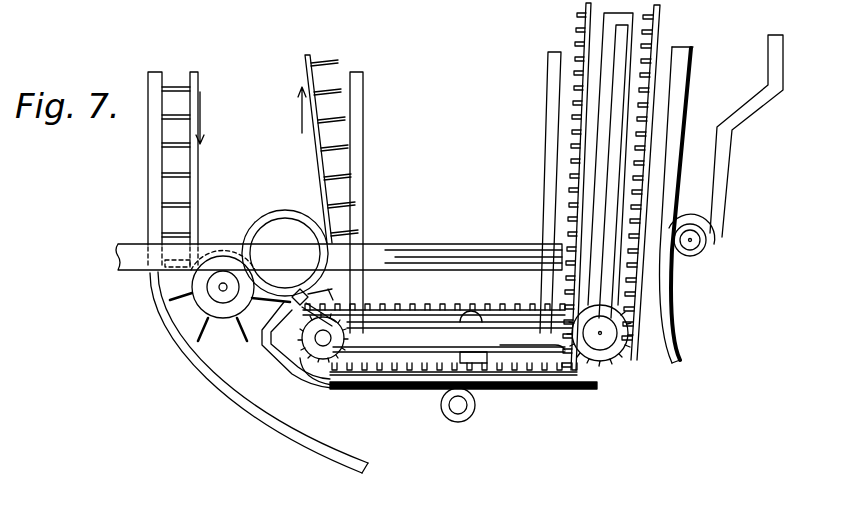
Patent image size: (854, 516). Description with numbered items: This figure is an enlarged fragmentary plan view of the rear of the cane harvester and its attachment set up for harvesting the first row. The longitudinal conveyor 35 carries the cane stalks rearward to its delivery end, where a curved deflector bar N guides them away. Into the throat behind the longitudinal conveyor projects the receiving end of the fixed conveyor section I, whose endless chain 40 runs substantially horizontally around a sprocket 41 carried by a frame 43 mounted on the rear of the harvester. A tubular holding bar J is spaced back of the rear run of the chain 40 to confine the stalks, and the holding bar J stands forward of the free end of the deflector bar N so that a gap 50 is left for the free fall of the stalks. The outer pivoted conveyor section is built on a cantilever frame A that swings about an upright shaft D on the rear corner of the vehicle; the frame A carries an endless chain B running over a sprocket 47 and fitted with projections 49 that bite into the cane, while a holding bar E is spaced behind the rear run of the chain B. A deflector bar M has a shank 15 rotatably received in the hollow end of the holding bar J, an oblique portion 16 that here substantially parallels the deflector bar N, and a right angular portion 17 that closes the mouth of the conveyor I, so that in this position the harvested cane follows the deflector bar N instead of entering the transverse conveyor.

The right angular portion 17 is at (268, 262).
The longitudinal conveyor 35 is at (305, 78).
The deflector bar M is at (313, 293).
The fixed conveyor section I is at (452, 310).
The projections 49 is at (585, 32).
The endless chain B is at (652, 38).
The cantilever frame A is at (618, 70).
The holding bar E is at (672, 302).
The endless chain 40 is at (417, 283).
The frame 43 is at (498, 330).
The sprocket 41 is at (275, 385).
The deflector bar N is at (235, 407).
The oblique portion 16 is at (297, 371).
The shank 15 is at (362, 388).
The gap 50 is at (365, 443).
The holding bar J is at (553, 390).
The sprocket 47 is at (607, 377).
The upright shaft D is at (605, 340).